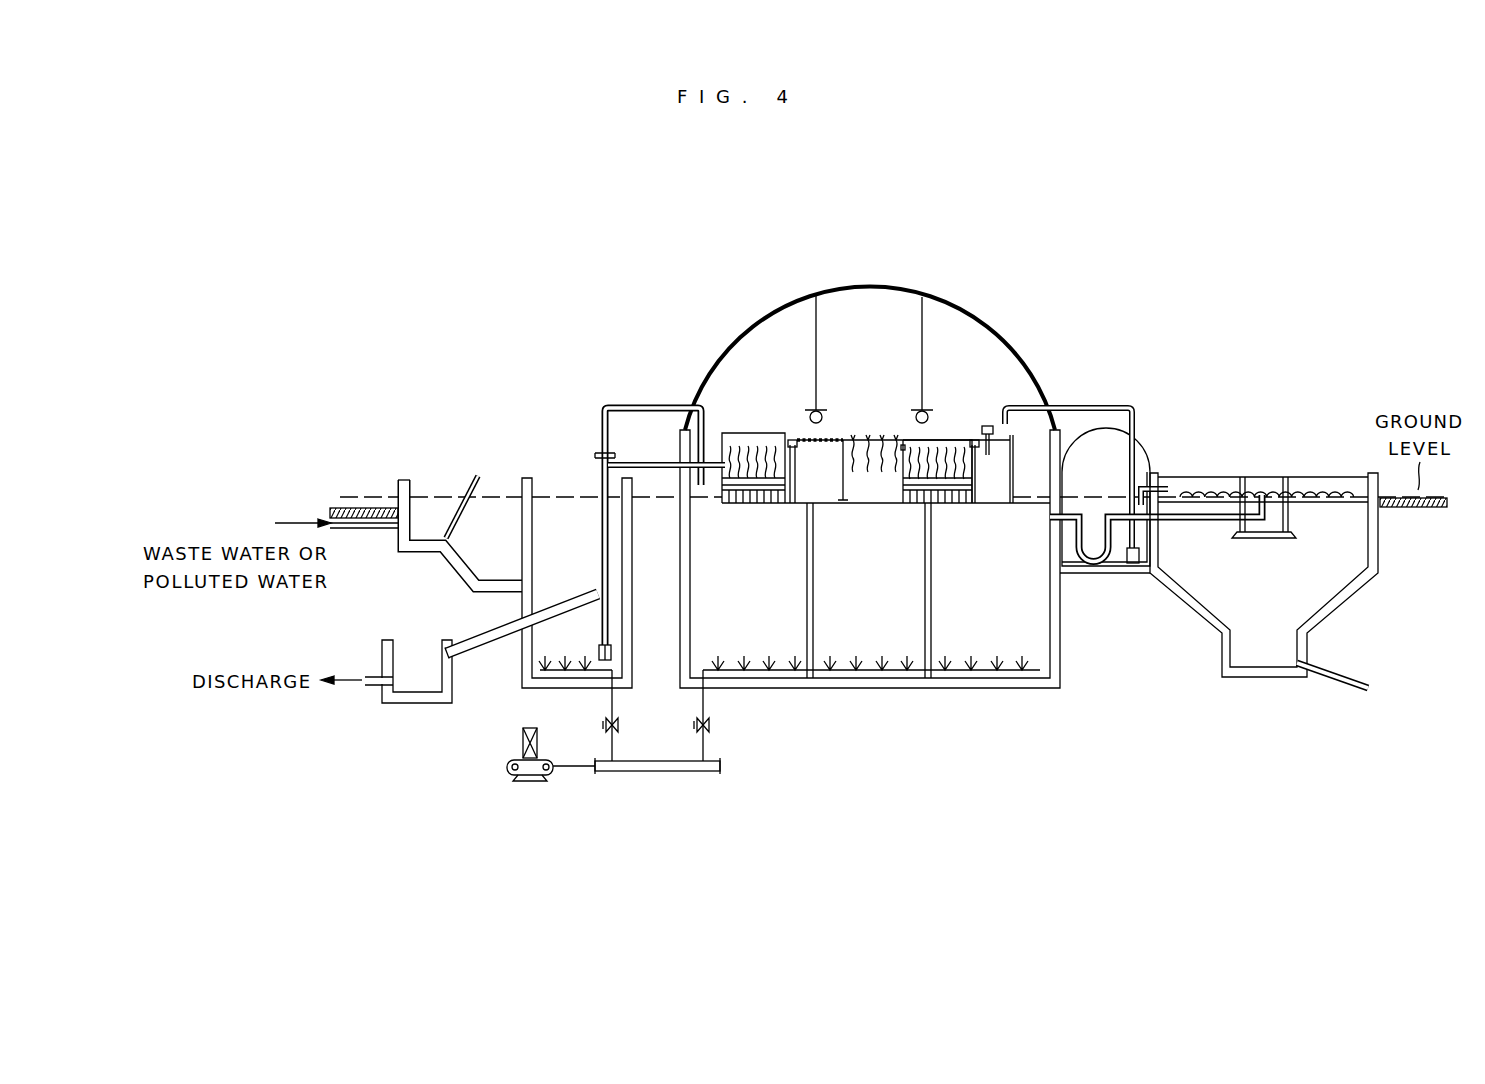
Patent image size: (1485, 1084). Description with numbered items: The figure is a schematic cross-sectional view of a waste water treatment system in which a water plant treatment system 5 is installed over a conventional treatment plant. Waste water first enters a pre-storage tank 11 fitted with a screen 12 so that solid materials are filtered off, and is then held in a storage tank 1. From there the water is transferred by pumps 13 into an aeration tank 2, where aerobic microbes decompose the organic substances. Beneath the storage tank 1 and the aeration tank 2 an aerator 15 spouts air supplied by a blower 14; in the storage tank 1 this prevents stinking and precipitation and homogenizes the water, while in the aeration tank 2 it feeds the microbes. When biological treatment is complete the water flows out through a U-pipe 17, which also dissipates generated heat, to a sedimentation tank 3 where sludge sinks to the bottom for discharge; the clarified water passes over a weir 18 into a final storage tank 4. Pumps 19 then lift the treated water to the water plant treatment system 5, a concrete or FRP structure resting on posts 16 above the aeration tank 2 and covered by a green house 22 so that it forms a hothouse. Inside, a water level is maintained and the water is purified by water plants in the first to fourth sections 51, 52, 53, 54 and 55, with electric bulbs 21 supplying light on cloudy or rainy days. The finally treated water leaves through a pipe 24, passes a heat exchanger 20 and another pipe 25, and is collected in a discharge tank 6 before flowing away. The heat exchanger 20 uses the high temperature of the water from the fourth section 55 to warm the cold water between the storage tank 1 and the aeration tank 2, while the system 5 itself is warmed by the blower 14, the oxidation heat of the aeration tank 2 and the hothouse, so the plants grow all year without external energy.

The storage tank 1 is at (544, 637).
The aeration tank 2 is at (1031, 640).
The sedimentation tank 3 is at (1355, 548).
The final storage tank 4 is at (1076, 565).
The water plant treatment system 5 is at (868, 503).
The discharge tank 6 is at (418, 686).
The pre-storage tank 11 is at (474, 556).
The screen 12 is at (470, 484).
The pumps 13 is at (613, 652).
The blower 14 is at (533, 782).
The aerator 15 is at (578, 670).
The posts 16 is at (925, 605).
The U-pipe 17 is at (1096, 560).
The weir 18 is at (1262, 488).
The pumps 19 is at (1137, 568).
The heat exchanger 20 is at (598, 476).
The electric bulbs 21 is at (925, 352).
The green house 22 is at (964, 308).
The pipe 24 is at (654, 472).
The pipe 25 is at (570, 598).
The first section 51 is at (998, 505).
The second section 52 is at (943, 443).
The third section 53 is at (873, 441).
The fourth section 54 is at (840, 443).
The fourth section 55 is at (756, 444).